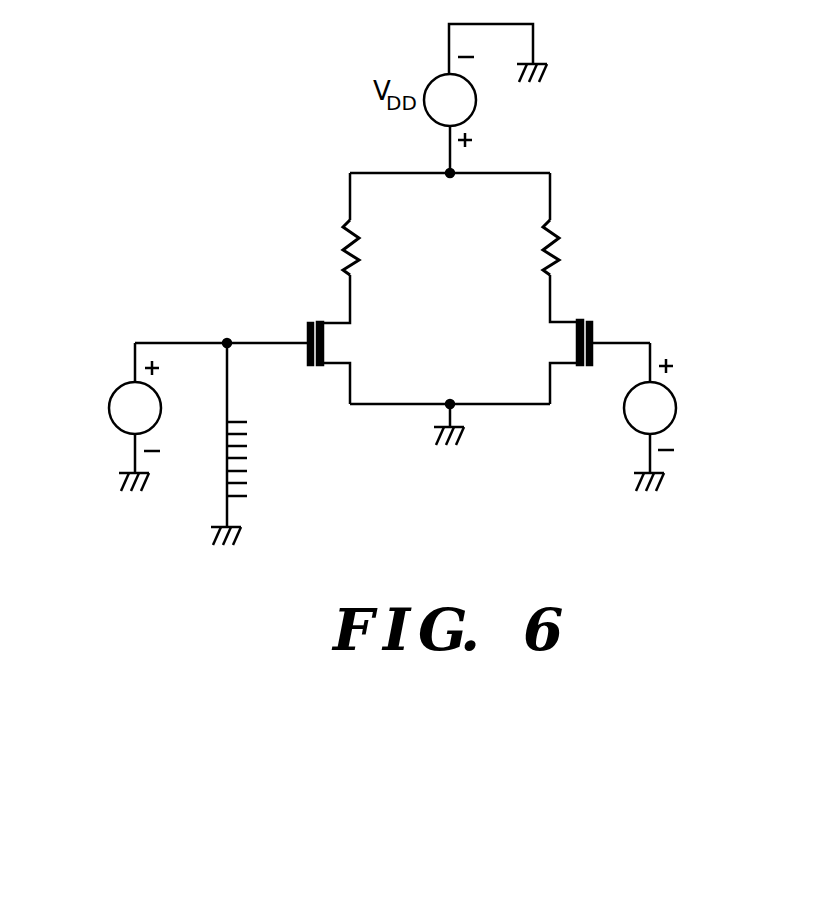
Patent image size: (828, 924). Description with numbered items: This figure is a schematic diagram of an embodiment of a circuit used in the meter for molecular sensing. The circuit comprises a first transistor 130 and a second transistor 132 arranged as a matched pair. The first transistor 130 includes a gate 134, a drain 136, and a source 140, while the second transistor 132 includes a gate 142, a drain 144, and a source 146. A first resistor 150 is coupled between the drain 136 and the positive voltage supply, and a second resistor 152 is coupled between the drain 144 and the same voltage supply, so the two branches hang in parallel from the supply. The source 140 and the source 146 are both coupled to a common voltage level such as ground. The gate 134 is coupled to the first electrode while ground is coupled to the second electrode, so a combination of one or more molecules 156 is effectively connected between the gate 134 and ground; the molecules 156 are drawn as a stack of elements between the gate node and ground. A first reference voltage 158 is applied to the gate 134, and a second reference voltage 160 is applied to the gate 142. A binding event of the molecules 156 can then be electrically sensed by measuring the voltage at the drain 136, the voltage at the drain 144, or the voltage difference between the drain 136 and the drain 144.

The first transistor 130 is at (336, 348).
The second transistor 132 is at (568, 348).
The gate 134 is at (265, 341).
The drain 136 is at (353, 293).
The source 140 is at (353, 378).
The gate 142 is at (633, 341).
The drain 144 is at (551, 291).
The source 146 is at (549, 378).
The first resistor 150 is at (356, 232).
The second resistor 152 is at (557, 232).
The molecules 156 is at (226, 462).
The first reference voltage 158 is at (114, 424).
The second reference voltage 160 is at (630, 423).